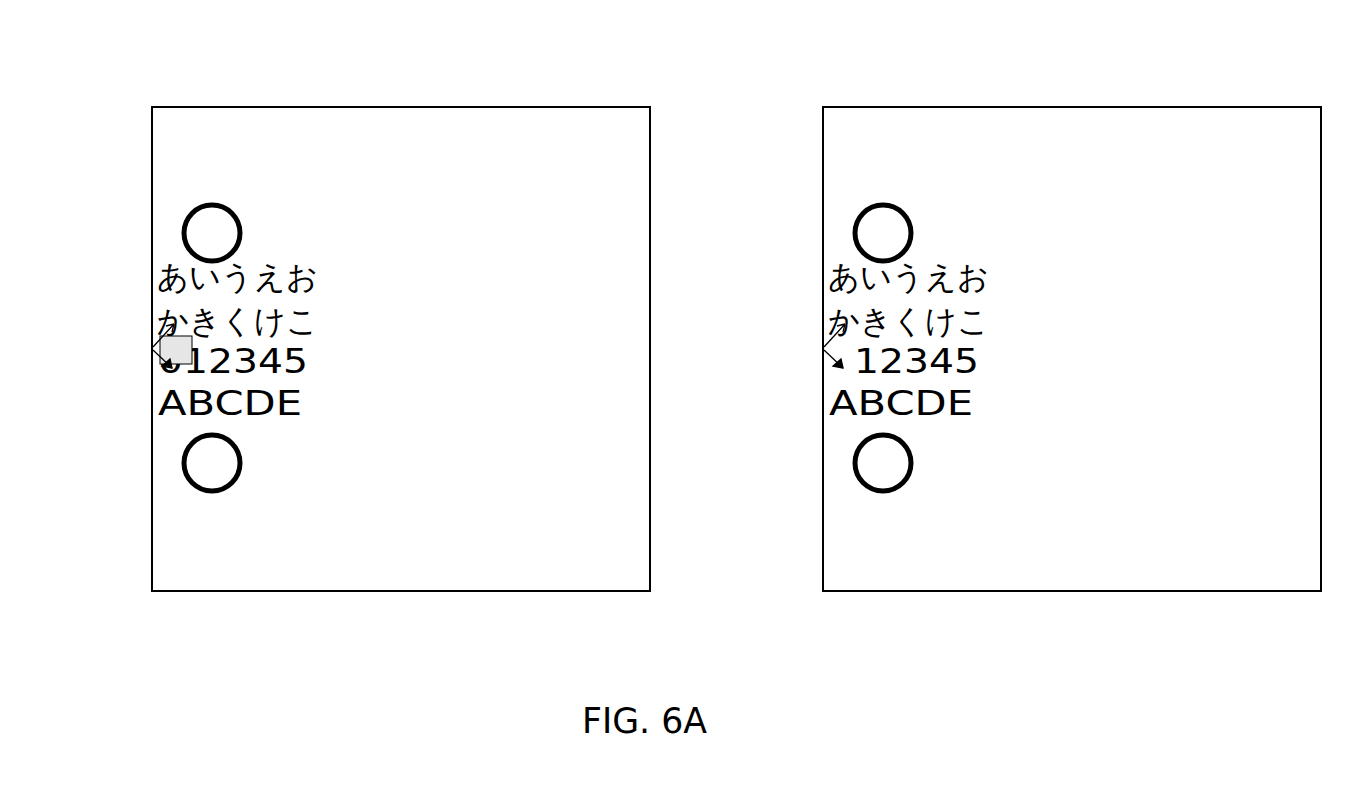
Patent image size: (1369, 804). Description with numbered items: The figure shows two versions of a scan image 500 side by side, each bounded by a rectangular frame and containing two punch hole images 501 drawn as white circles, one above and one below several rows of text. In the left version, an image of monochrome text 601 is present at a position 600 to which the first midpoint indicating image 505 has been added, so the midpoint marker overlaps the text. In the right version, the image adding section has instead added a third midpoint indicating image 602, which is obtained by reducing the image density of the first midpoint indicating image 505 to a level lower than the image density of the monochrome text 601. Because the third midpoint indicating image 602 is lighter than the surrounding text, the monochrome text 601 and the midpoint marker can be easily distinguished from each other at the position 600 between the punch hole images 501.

The scan image 500 is at (352, 107).
The punch hole image 501 is at (194, 211).
The first midpoint indicating image 505 is at (152, 349).
The position 600 is at (155, 333).
The monochrome text 601 is at (160, 367).
The third midpoint indicating image 602 is at (823, 350).